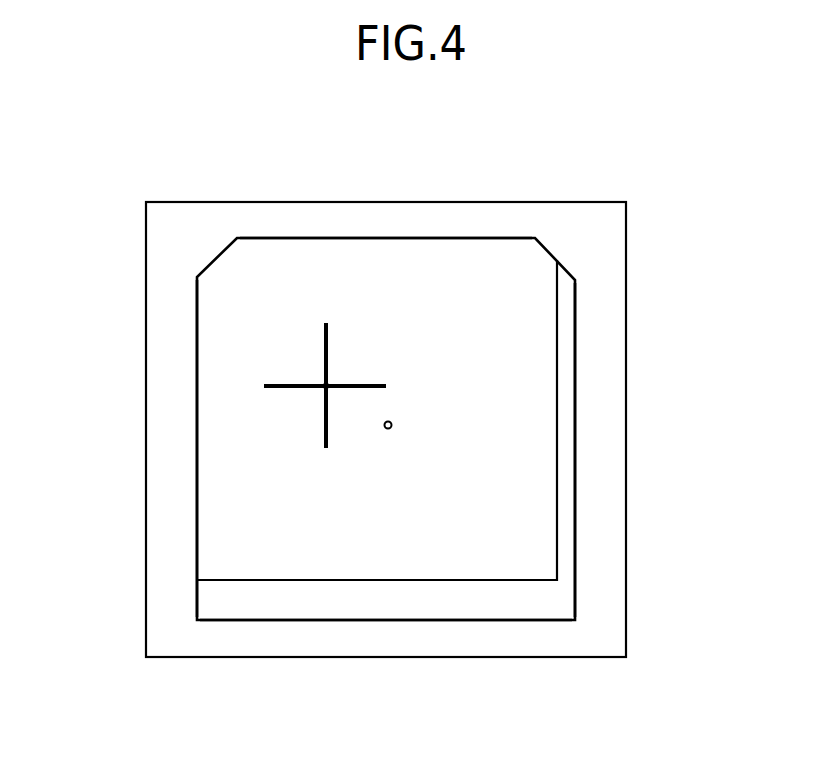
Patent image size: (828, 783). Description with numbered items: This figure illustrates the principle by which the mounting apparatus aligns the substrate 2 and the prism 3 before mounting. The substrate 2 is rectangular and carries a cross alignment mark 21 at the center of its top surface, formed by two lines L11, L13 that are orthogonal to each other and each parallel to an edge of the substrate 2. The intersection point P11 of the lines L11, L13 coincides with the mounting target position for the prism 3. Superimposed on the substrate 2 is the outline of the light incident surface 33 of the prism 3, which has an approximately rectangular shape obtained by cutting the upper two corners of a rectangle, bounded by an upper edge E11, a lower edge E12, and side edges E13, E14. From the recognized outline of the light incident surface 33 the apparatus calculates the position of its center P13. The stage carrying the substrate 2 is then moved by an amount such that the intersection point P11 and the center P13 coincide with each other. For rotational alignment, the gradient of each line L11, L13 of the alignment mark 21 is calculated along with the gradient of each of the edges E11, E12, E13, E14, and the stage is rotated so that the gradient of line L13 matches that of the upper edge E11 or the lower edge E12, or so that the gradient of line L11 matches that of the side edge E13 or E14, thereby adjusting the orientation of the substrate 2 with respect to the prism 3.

The substrate 2 is at (438, 580).
The prism 3 is at (580, 332).
The light incident surface 33 is at (563, 405).
The alignment mark 21 is at (352, 353).
The upper edge E11 is at (334, 238).
The lower edge E12 is at (353, 620).
The side edge E13 is at (197, 432).
The side edge E14 is at (575, 524).
The line L11 is at (328, 420).
The line L13 is at (280, 386).
The intersection point P11 is at (324, 390).
The center P13 is at (392, 422).